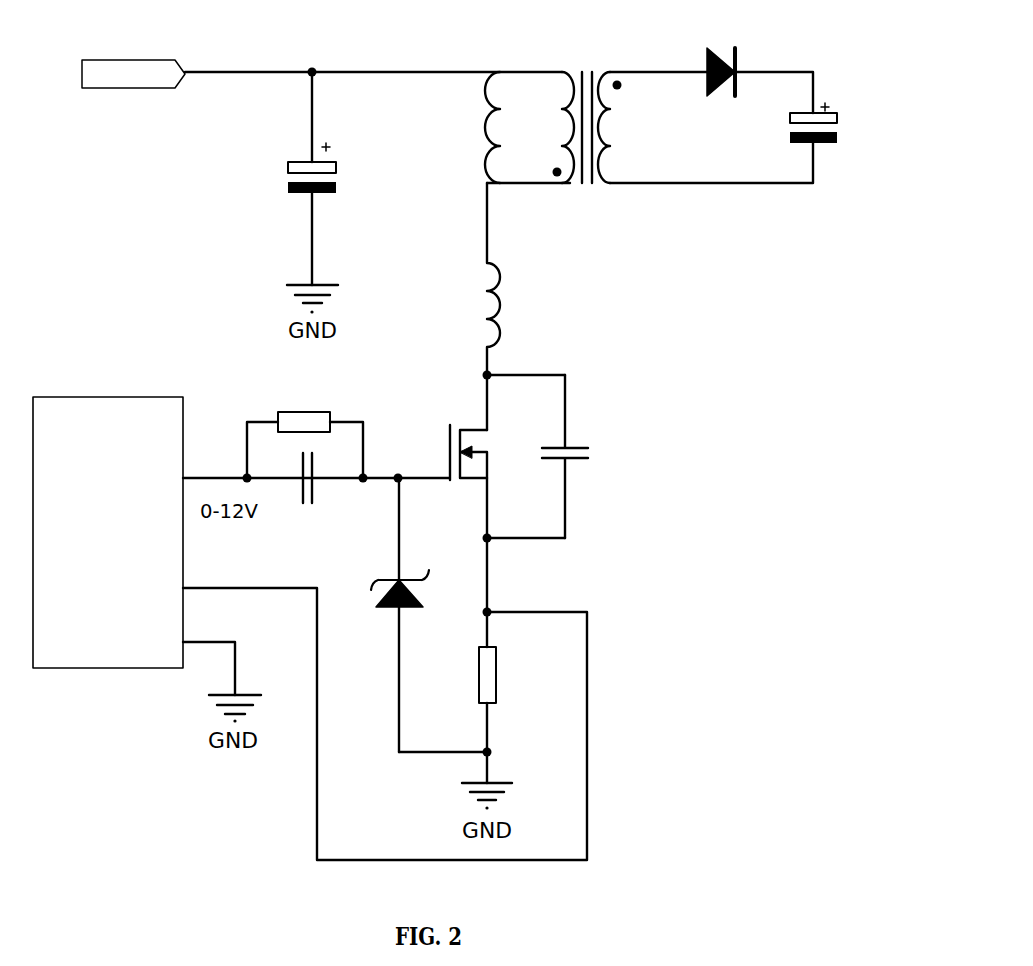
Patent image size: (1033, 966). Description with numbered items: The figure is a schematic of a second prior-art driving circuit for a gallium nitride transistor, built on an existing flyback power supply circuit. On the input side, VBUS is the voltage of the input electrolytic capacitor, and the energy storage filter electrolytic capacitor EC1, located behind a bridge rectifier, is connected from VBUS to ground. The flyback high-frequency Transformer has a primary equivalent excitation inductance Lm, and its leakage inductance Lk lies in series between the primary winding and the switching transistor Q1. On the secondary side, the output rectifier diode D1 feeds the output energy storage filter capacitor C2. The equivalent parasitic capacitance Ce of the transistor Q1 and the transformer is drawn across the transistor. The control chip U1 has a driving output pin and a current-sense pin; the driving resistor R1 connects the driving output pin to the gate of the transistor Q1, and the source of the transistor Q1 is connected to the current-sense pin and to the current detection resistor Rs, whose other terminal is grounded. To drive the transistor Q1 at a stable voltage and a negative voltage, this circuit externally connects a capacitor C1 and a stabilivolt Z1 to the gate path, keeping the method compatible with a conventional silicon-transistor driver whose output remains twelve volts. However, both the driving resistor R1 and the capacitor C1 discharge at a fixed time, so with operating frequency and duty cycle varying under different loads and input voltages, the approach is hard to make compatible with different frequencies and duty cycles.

The voltage of input electrolytic capacitor VBUS is at (133, 74).
The energy storage filter electrolytic capacitor EC1 is at (340, 178).
The flyback high-frequency transformer Transformer is at (545, 105).
The primary equivalent excitation inductance Lm is at (474, 127).
The output rectifier diode D1 is at (722, 53).
The output energy storage filter capacitor C2 is at (794, 126).
The leakage inductance Lk is at (513, 306).
The GaN transistor Q1 is at (442, 433).
The equivalent parasitic capacitance Ce is at (580, 456).
The current detection resistor Rs is at (505, 682).
The stabilivolt Z1 is at (424, 615).
The driving resistor R1 is at (305, 429).
The capacitor C1 is at (307, 498).
The control chip U1 is at (108, 519).